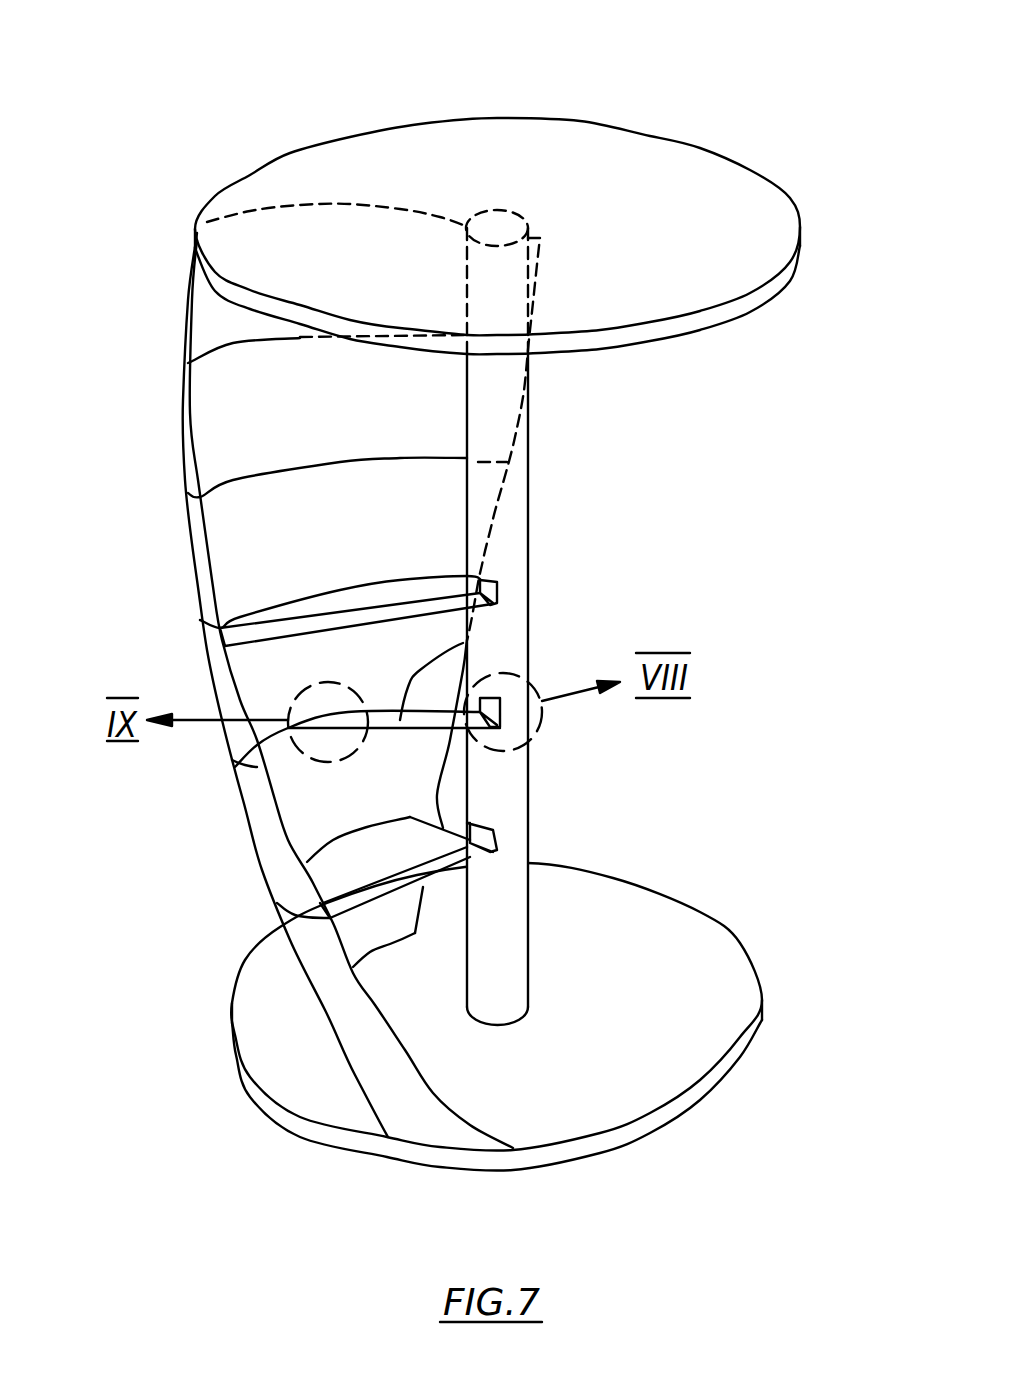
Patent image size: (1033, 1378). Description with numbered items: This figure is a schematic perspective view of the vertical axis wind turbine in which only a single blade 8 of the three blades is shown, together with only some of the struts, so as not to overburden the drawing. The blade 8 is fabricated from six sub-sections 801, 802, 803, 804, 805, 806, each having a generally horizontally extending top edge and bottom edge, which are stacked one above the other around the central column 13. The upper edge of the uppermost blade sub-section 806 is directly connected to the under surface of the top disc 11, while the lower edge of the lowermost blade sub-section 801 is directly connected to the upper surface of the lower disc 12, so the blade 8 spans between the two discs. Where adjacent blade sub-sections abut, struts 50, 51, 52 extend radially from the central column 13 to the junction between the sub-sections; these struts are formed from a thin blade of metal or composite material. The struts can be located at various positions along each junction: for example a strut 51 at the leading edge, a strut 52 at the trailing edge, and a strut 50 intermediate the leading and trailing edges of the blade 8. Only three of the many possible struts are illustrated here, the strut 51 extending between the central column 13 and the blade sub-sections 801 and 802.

The blade 8 is at (215, 422).
The top disc 11 is at (537, 167).
The lower disc 12 is at (655, 957).
The central column 13 is at (505, 927).
The strut 50 is at (463, 643).
The strut 51 is at (443, 828).
The strut 52 is at (375, 892).
The blade sub-section 801 is at (325, 962).
The blade sub-section 802 is at (255, 808).
The blade sub-section 803 is at (212, 692).
The blade sub-section 804 is at (400, 527).
The blade sub-section 805 is at (398, 404).
The blade sub-section 806 is at (215, 325).